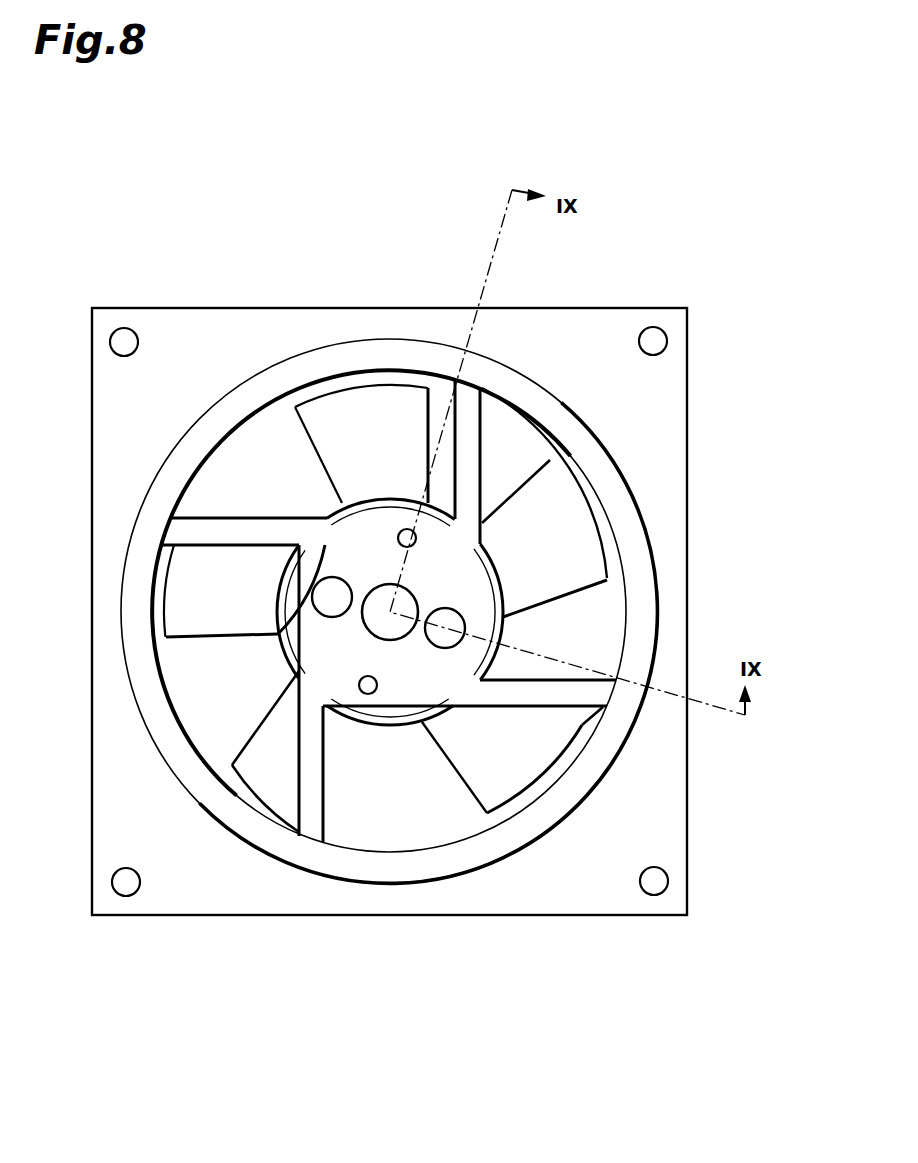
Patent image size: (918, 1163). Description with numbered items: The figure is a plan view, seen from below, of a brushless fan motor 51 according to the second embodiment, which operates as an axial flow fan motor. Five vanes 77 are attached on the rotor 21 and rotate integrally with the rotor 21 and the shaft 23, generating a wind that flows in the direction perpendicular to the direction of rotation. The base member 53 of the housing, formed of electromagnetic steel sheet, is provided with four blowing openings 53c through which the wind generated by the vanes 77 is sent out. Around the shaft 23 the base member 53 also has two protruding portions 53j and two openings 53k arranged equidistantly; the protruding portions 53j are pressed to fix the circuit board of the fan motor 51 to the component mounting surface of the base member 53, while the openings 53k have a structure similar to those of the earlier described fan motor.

The fan motor 51 is at (640, 190).
The base member 53 is at (660, 455).
The blowing openings 53c is at (247, 453).
The protruding portions 53j is at (405, 522).
The openings 53k is at (317, 610).
The rotor 21 is at (503, 617).
The shaft 23 is at (402, 605).
The vanes 77 is at (355, 403).